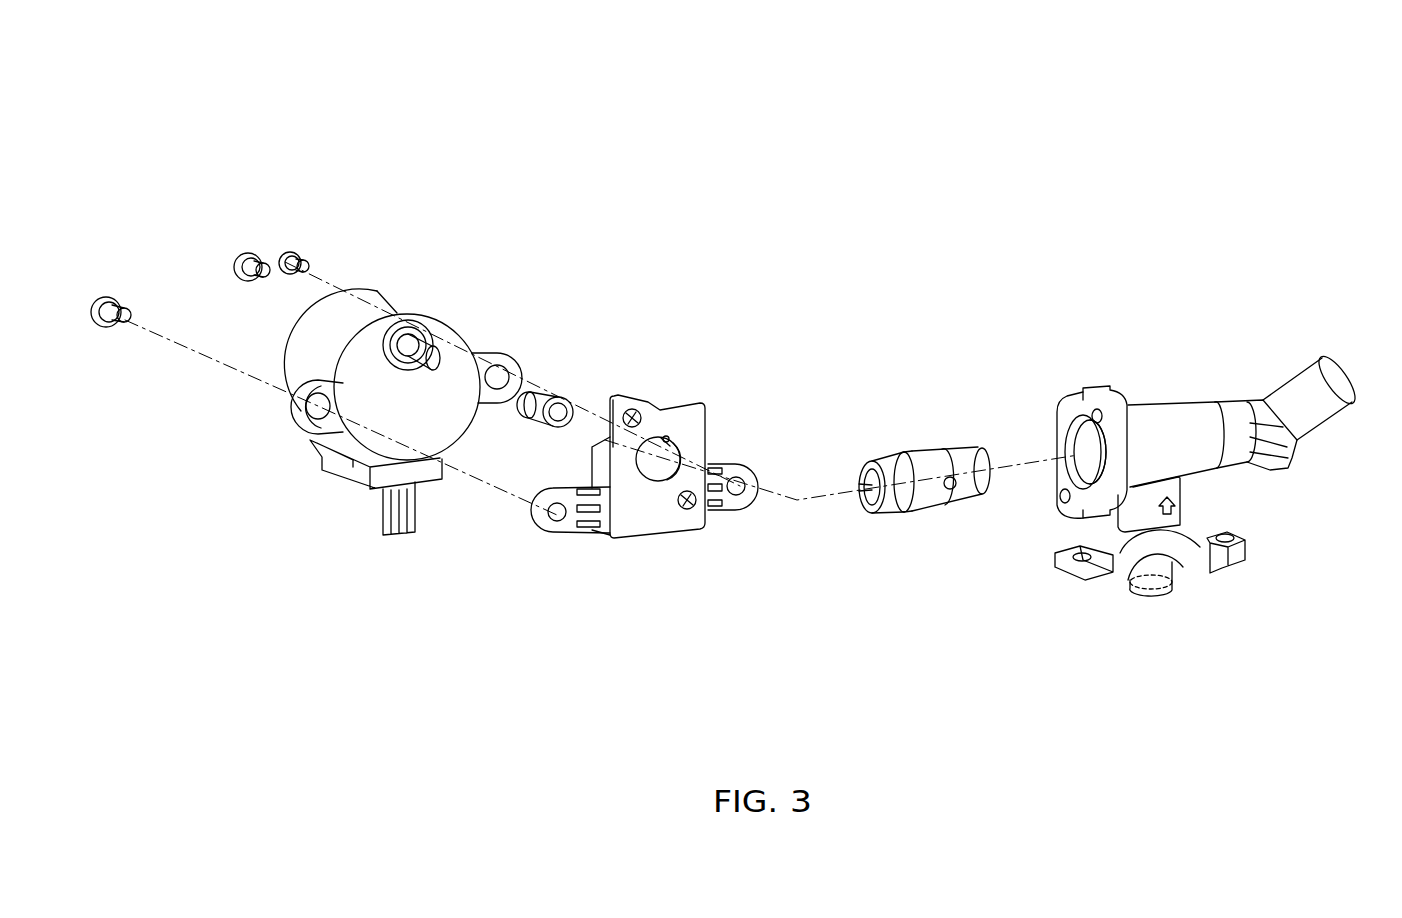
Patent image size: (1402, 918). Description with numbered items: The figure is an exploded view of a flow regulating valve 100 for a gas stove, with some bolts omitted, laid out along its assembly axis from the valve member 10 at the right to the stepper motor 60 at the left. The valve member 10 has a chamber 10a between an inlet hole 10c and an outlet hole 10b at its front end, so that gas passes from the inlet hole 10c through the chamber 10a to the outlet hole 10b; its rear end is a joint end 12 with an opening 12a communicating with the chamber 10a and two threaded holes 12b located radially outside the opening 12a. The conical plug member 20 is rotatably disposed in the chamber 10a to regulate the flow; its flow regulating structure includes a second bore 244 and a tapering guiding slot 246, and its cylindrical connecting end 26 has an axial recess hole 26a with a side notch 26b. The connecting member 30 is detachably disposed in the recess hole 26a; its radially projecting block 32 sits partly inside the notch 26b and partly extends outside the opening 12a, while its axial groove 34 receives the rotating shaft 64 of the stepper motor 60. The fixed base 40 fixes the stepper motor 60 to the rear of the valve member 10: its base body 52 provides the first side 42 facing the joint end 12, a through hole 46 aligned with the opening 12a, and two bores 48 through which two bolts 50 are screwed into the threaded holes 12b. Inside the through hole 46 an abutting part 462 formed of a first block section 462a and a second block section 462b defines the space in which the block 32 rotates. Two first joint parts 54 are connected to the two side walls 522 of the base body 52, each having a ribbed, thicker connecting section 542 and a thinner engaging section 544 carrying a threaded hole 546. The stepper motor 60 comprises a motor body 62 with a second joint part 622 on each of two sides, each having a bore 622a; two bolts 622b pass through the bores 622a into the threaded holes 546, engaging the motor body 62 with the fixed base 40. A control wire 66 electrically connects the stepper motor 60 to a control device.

The flow regulating valve 100 is at (1143, 216).
The valve member 10 is at (1246, 388).
The chamber 10a is at (1057, 477).
The outlet hole 10b is at (1343, 390).
The inlet hole 10c is at (1137, 585).
The joint end 12 is at (1092, 393).
The opening 12a is at (1073, 423).
The threaded holes 12b is at (1110, 393).
The plug member 20 is at (968, 428).
The connecting end 26 is at (890, 503).
The recess hole 26a is at (862, 503).
The notch 26b is at (853, 480).
The second bore 244 is at (947, 497).
The guiding slot 246 is at (941, 470).
The connecting member 30 is at (564, 378).
The block 32 is at (582, 405).
The groove 34 is at (541, 393).
The fixed base 40 is at (651, 382).
The first side 42 is at (637, 520).
The through hole 46 is at (652, 482).
The abutting part 462 is at (845, 322).
The first block section 462a is at (693, 435).
The second block section 462b is at (665, 440).
The bores 48 is at (636, 408).
The base body 52 is at (596, 442).
The side walls 522 is at (600, 470).
The first joint parts 54 is at (637, 622).
The connecting section 542 is at (593, 523).
The engaging section 544 is at (570, 523).
The threaded hole 546 is at (555, 520).
The bolts 50 is at (285, 232).
The stepper motor 60 is at (355, 278).
The motor body 62 is at (390, 303).
The second joint part 622 is at (330, 420).
The bore 622a is at (310, 410).
The bolts 622b is at (110, 297).
The rotating shaft 64 is at (437, 345).
The control wire 66 is at (387, 535).